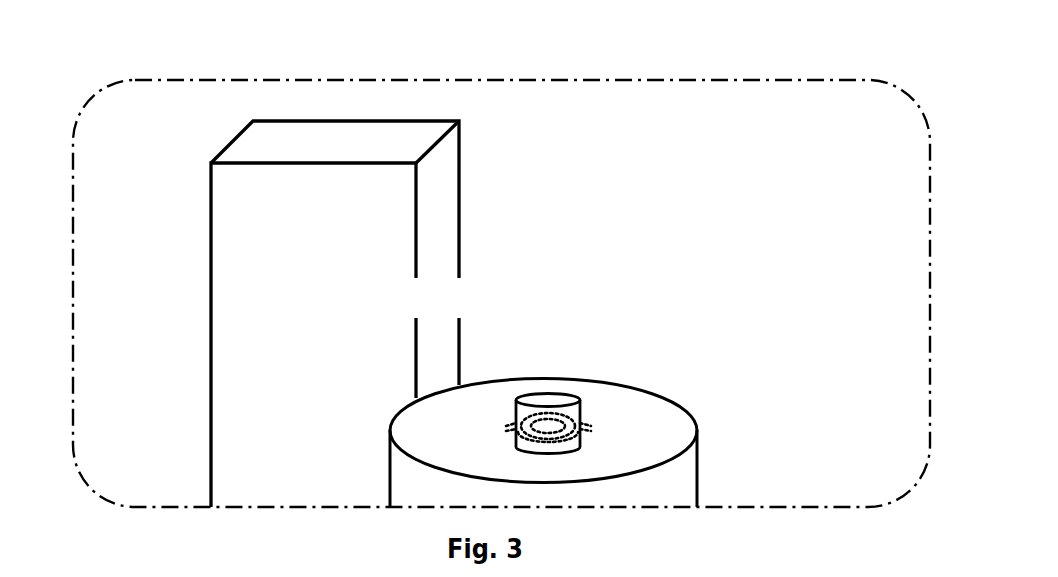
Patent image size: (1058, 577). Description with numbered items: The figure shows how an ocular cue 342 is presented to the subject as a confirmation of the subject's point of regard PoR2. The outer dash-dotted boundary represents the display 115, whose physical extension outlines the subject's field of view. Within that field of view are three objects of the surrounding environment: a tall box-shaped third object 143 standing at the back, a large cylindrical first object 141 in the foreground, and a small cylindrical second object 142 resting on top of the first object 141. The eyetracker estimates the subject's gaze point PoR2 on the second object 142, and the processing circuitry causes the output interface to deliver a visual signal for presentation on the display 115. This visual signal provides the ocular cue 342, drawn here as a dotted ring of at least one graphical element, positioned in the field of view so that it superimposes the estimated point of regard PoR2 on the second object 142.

The display 115 is at (501, 260).
The first object 141 is at (484, 427).
The second object 142 is at (626, 371).
The third object 143 is at (412, 314).
The ocular cue 342 is at (654, 407).
The second gaze point PoR2 is at (474, 356).